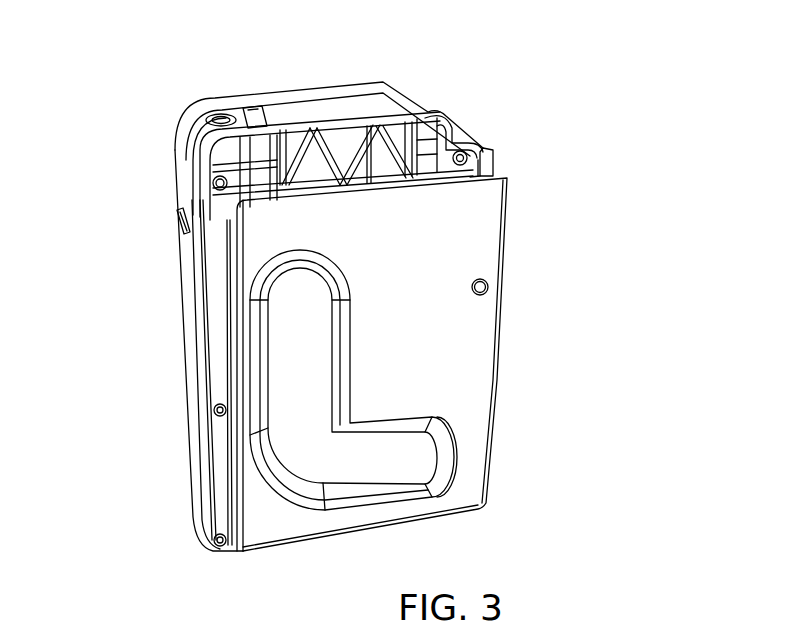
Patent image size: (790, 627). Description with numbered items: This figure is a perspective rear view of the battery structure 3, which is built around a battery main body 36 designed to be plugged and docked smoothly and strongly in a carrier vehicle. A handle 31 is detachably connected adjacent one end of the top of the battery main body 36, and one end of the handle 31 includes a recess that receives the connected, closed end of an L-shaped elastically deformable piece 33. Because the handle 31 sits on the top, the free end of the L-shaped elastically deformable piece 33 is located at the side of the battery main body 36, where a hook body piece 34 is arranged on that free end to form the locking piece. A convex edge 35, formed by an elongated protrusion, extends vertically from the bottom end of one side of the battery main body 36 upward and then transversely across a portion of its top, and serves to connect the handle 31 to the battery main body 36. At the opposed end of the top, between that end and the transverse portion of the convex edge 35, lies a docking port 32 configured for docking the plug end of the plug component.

The battery structure 3 is at (157, 421).
The handle 31 is at (352, 132).
The docking port 32 is at (496, 158).
The L-shaped elastically deformable piece 33 is at (182, 127).
The hook body piece 34 is at (178, 220).
The convex edge 35 is at (207, 332).
The battery main body 36 is at (430, 362).